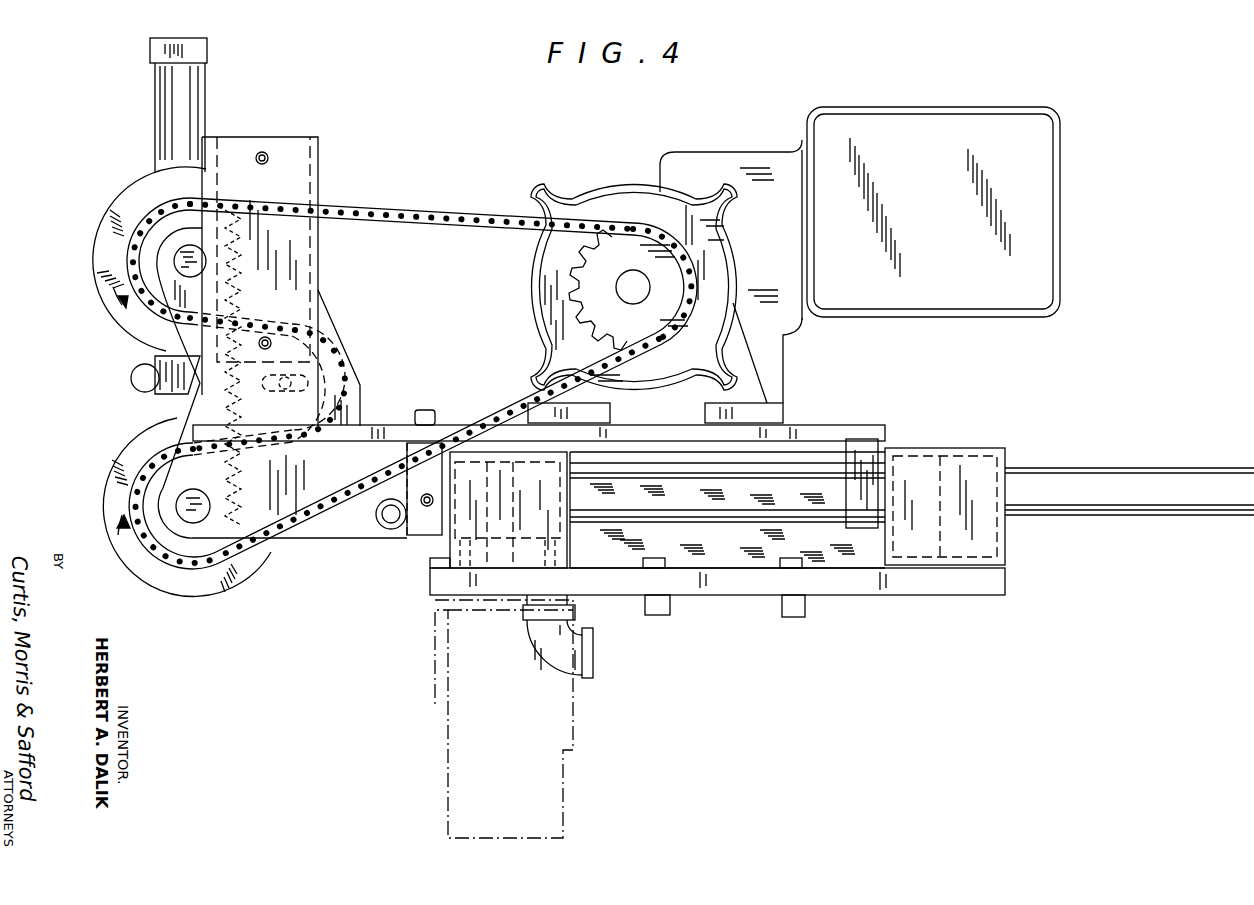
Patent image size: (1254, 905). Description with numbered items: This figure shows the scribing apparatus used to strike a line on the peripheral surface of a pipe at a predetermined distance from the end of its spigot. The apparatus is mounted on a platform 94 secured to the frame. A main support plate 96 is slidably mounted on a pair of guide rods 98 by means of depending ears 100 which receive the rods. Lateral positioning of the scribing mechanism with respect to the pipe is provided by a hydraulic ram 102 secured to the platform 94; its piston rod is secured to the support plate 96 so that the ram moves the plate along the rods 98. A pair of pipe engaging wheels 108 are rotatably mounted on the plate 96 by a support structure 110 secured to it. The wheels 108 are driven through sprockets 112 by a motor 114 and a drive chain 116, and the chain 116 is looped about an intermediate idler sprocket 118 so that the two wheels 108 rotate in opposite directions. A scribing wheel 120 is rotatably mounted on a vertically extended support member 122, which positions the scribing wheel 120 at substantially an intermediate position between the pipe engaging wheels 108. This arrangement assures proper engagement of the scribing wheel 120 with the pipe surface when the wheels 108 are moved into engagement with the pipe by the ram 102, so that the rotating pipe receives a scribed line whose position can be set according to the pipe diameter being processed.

The platform 94 is at (823, 578).
The main support plate 96 is at (885, 424).
The guide rods 98 is at (1104, 478).
The depending ears 100 is at (420, 540).
The hydraulic ram 102 is at (735, 570).
The pipe engaging wheels 108 is at (130, 210).
The support structure 110 is at (324, 312).
The sprockets 112 is at (148, 265).
The motor 114 is at (606, 187).
The drive chain 116 is at (446, 210).
The intermediate idler sprocket 118 is at (343, 378).
The scribing wheel 120 is at (132, 384).
The support member 122 is at (205, 92).